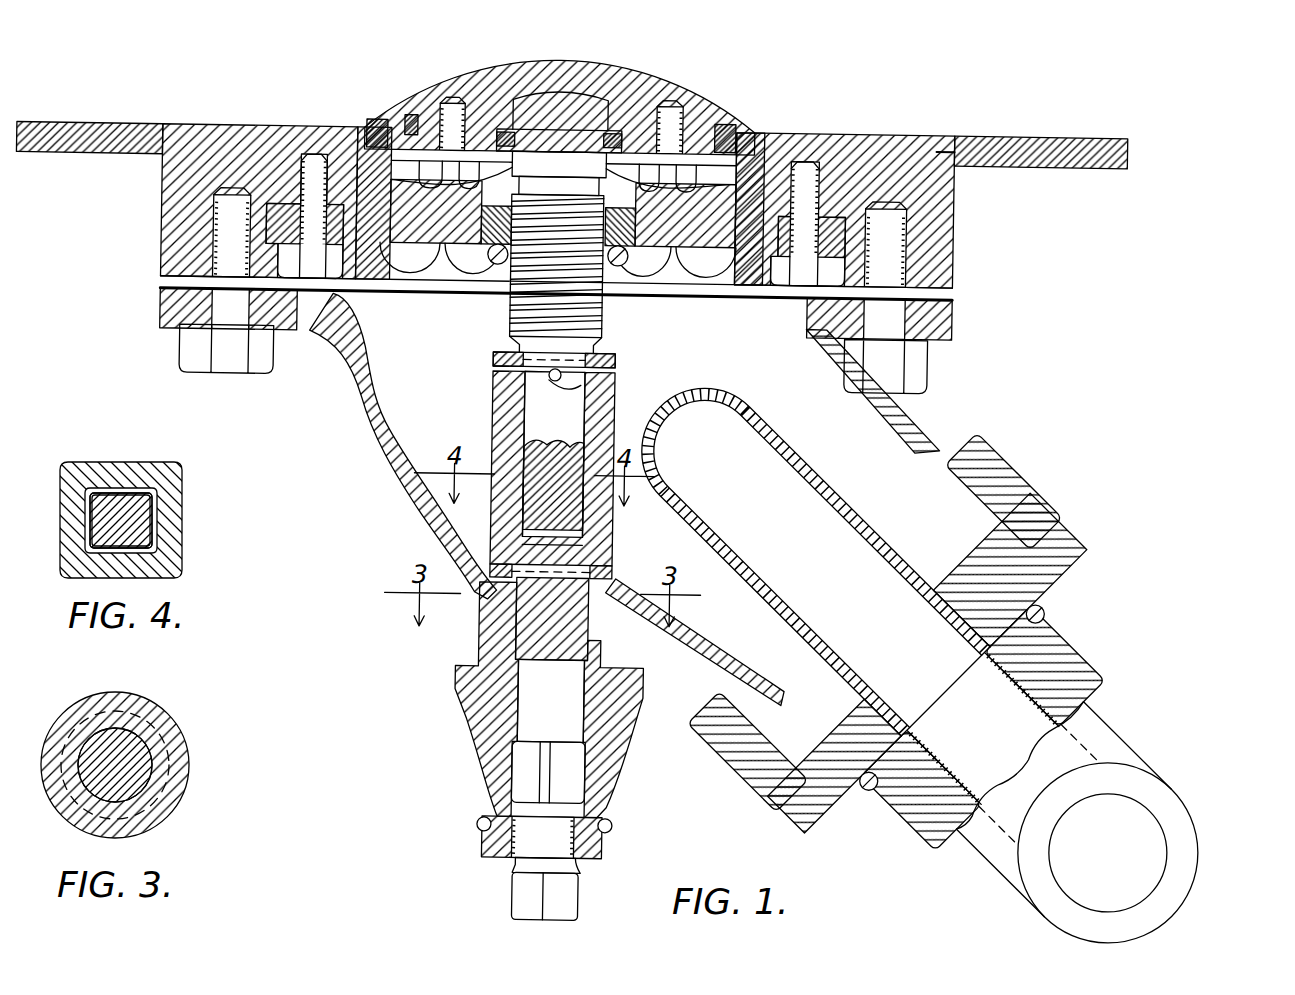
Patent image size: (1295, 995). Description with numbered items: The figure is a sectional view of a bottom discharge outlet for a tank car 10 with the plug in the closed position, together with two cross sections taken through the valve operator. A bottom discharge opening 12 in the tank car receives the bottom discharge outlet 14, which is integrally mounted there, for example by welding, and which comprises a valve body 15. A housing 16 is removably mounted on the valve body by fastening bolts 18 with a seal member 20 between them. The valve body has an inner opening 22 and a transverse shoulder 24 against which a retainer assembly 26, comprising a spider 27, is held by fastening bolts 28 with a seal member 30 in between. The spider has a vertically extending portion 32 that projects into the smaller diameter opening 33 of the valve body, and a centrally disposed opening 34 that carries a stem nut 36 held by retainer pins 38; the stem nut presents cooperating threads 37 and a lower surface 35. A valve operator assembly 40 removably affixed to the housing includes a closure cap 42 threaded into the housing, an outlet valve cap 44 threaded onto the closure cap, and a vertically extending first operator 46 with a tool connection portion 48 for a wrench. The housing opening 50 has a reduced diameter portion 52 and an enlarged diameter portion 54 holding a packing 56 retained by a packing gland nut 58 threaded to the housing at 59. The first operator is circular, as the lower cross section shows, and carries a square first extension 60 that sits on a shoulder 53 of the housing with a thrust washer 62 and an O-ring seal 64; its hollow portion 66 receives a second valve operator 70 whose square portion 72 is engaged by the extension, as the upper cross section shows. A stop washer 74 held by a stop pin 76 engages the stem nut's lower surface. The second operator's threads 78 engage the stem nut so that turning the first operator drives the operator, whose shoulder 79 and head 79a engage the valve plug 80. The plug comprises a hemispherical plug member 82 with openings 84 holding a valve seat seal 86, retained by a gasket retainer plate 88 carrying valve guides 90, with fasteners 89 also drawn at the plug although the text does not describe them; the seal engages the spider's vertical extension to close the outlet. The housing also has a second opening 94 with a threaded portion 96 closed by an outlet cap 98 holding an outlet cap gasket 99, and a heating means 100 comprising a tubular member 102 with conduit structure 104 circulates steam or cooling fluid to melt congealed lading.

In FIG. 1, the tank car 10 is at (1090, 120).
In FIG. 1, the bottom discharge opening 12 is at (950, 146).
In FIG. 1, the bottom discharge outlet 14 is at (972, 436).
In FIG. 1, the valve body 15 is at (957, 234).
In FIG. 1, the housing 16 is at (390, 453).
In FIG. 1, the fastening bolts 18 is at (190, 356).
In FIG. 1, the seal member 20 is at (955, 292).
In FIG. 1, the inner opening 22 is at (838, 294).
In FIG. 1, the transverse shoulder 24 is at (841, 211).
In FIG. 1, the retainer assembly 26 is at (752, 266).
In FIG. 1, the spider 27 is at (702, 263).
In FIG. 1, the fastening bolts 28 is at (809, 161).
In FIG. 1, the seal member 30 is at (761, 167).
In FIG. 1, the vertically extending portion 32 is at (372, 133).
In FIG. 1, the smaller diameter opening 33 is at (345, 133).
In FIG. 1, the centrally disposed opening 34 is at (620, 262).
In FIG. 1, the lower surface 35 is at (512, 266).
In FIG. 1, the stem nut 36 is at (507, 262).
In FIG. 1, the cooperating threads 37 is at (497, 246).
In FIG. 1, the retainer pins 38 is at (500, 256).
In FIG. 1, the valve operator assembly 40 is at (442, 670).
In FIG. 3, the valve operator assembly 40 is at (185, 719).
In FIG. 1, the closure cap 42 is at (469, 730).
In FIG. 1, the outlet valve cap 44 is at (517, 906).
In FIG. 1, the first operator 46 is at (500, 648).
In FIG. 3, the first operator 46 is at (140, 773).
In FIG. 1, the tool connection portion 48 is at (600, 785).
In FIG. 1, the opening 50 is at (476, 519).
In FIG. 1, the reduced diameter portion 52 is at (543, 619).
In FIG. 1, the shoulder 53 is at (507, 561).
In FIG. 1, the enlarged diameter portion 54 is at (634, 667).
In FIG. 1, the packing 56 is at (608, 639).
In FIG. 3, the packing 56 is at (178, 753).
In FIG. 1, the packing gland nut 58 is at (609, 711).
In FIG. 1, the threaded engagement 59 is at (594, 695).
In FIG. 1, the first extension 60 is at (499, 406).
In FIG. 4, the first extension 60 is at (178, 520).
In FIG. 1, the thrust washer 62 is at (627, 564).
In FIG. 1, the O-ring seal 64 is at (622, 554).
In FIG. 4, the hollow portion 66 is at (150, 530).
In FIG. 1, the second valve operator 70 is at (555, 437).
In FIG. 4, the second valve operator 70 is at (116, 494).
In FIG. 1, the portion 72 is at (547, 474).
In FIG. 4, the portion 72 is at (135, 500).
In FIG. 1, the stop washer 74 is at (624, 361).
In FIG. 1, the stop pin 76 is at (569, 378).
In FIG. 1, the threads 78 is at (556, 273).
In FIG. 1, the shoulder 79 is at (591, 153).
In FIG. 1, the head 79a is at (600, 102).
In FIG. 1, the valve plug 80 is at (738, 88).
In FIG. 1, the plug member 82 is at (579, 65).
In FIG. 1, the openings 84 is at (418, 117).
In FIG. 1, the valve seat seal 86 is at (395, 138).
In FIG. 1, the gasket retainer plate 88 is at (490, 131).
In FIG. 1, the cap bolt 89 is at (450, 117).
In FIG. 1, the valve guides 90 is at (395, 275).
In FIG. 1, the second opening 94 is at (843, 469).
In FIG. 1, the threaded portion 96 is at (991, 468).
In FIG. 1, the outlet cap 98 is at (1046, 512).
In FIG. 1, the outlet cap gasket 99 is at (1062, 537).
In FIG. 1, the heating means 100 is at (1120, 680).
In FIG. 1, the tubular member 102 is at (907, 575).
In FIG. 1, the conduit structure 104 is at (1211, 813).